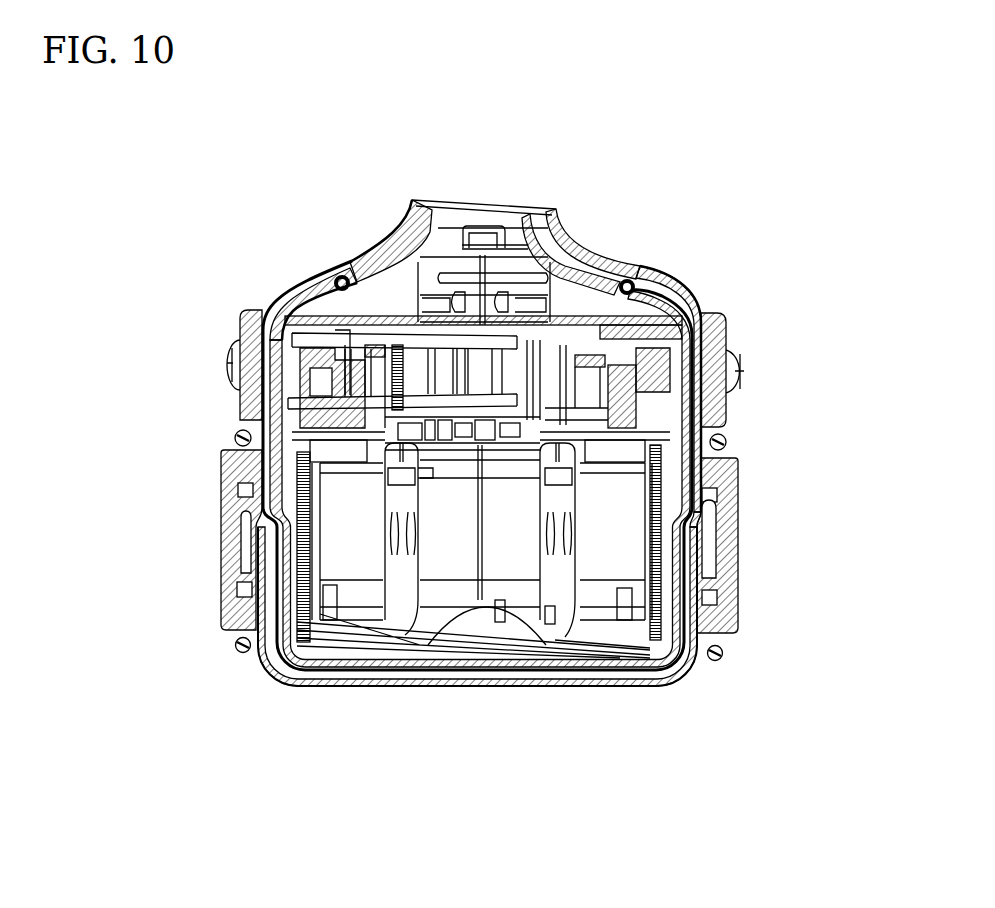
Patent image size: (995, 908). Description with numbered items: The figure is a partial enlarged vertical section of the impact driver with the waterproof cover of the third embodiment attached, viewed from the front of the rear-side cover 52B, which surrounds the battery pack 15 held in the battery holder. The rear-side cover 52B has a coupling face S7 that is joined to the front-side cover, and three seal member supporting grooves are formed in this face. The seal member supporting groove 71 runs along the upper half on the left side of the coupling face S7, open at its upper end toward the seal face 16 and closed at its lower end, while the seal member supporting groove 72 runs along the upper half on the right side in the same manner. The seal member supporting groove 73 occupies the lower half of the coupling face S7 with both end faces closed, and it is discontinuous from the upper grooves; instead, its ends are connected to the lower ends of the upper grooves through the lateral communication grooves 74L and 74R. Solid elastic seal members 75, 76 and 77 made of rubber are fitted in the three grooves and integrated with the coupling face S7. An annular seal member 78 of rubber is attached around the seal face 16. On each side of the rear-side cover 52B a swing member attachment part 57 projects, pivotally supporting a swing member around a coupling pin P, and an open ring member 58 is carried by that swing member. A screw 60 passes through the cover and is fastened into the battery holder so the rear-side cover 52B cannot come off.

The seal face 16 is at (344, 275).
The annular seal member 78 is at (341, 268).
The seal member supporting groove 71 is at (279, 303).
The seal member 75 is at (240, 312).
The screw 60 is at (232, 350).
The coupling pin P is at (235, 441).
The swing member attachment part 57 is at (222, 508).
The communication groove 74L is at (221, 547).
The communication groove 74R is at (737, 557).
The open ring member 58 is at (235, 645).
The seal member supporting groove 72 is at (658, 272).
The rear-side cover 52B is at (680, 272).
The seal member 76 is at (692, 320).
The coupling face S7 is at (726, 338).
The seal member supporting groove 73 is at (368, 690).
The battery pack 15 is at (458, 566).
The seal member 77 is at (576, 690).